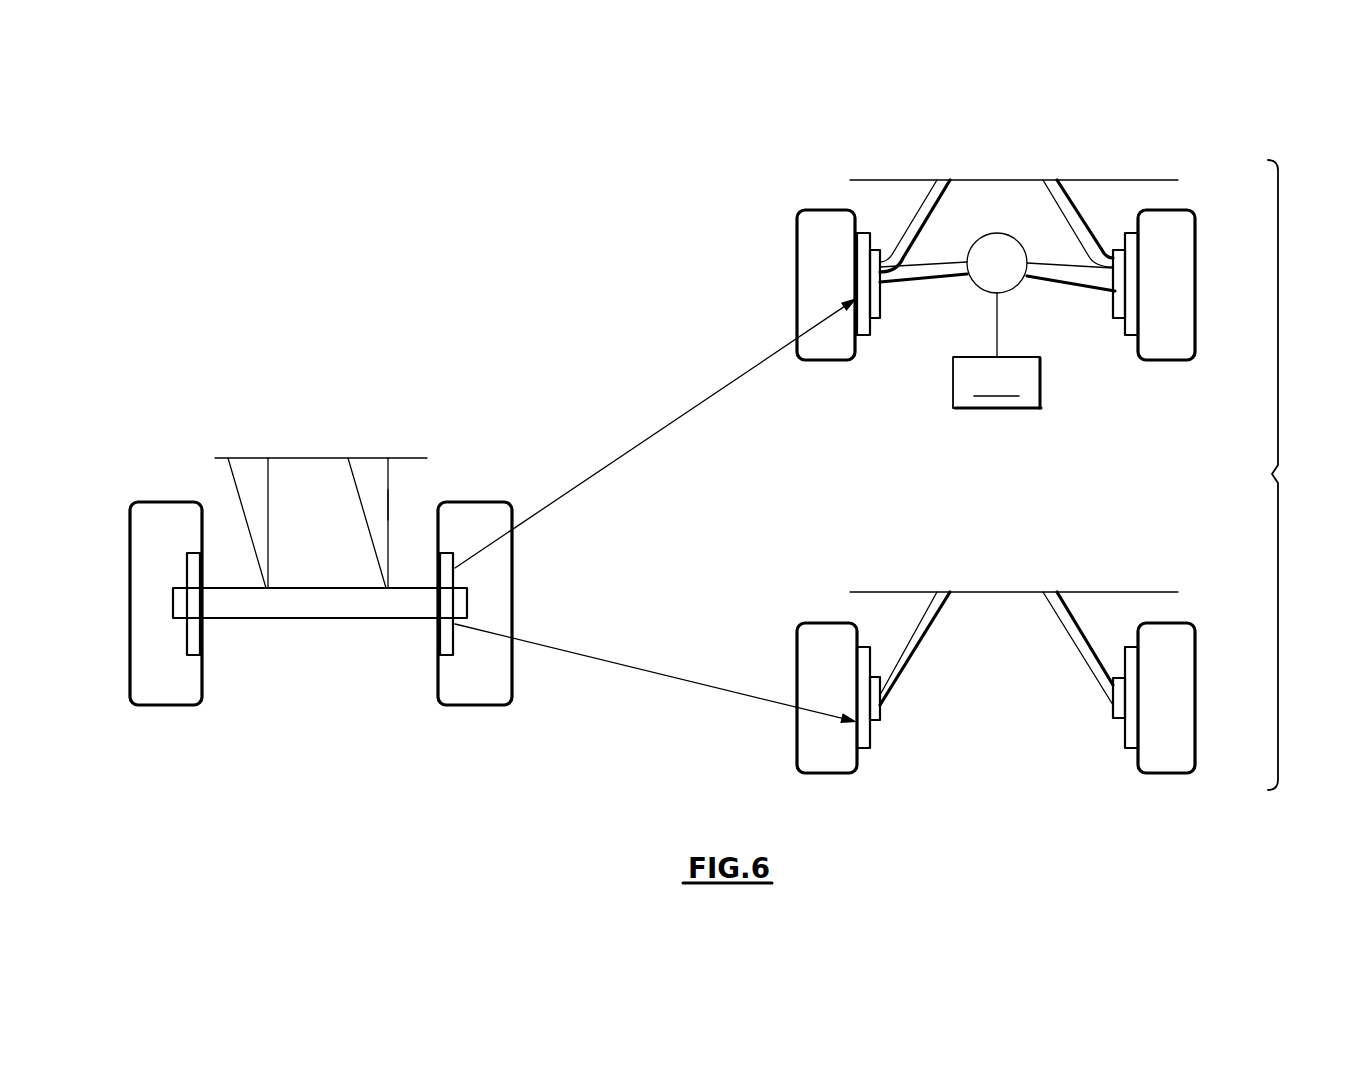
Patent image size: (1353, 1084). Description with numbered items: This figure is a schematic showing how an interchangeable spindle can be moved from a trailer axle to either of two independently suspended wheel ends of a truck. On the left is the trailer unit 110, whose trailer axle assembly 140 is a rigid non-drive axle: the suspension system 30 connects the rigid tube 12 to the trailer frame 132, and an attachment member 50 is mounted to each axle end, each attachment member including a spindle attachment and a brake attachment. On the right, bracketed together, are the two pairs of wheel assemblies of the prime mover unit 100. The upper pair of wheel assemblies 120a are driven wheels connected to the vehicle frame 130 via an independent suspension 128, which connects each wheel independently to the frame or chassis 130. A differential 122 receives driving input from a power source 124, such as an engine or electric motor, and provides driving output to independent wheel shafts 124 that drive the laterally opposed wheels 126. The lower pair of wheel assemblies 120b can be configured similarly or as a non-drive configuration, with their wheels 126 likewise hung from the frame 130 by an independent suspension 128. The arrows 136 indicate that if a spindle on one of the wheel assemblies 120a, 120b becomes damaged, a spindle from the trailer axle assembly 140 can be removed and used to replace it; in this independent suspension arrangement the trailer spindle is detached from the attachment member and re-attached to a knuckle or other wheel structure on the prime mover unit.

The rigid tube 12 is at (282, 607).
The suspension system 30 is at (402, 497).
The attachment member 50 is at (447, 558).
The prime mover unit 100 is at (1030, 482).
The trailer unit 110 is at (126, 441).
The wheel assemblies 120a is at (871, 380).
The wheel assemblies 120b is at (868, 771).
The differential 122 is at (1003, 260).
The power source / wheel shafts 124 is at (924, 282).
The wheels 126 is at (812, 245).
The independent suspension 128 is at (1042, 198).
The vehicle frame 130 is at (882, 180).
The trailer frame 132 is at (305, 457).
The arrows 136 is at (662, 427).
The trailer axle assembly 140 is at (384, 640).